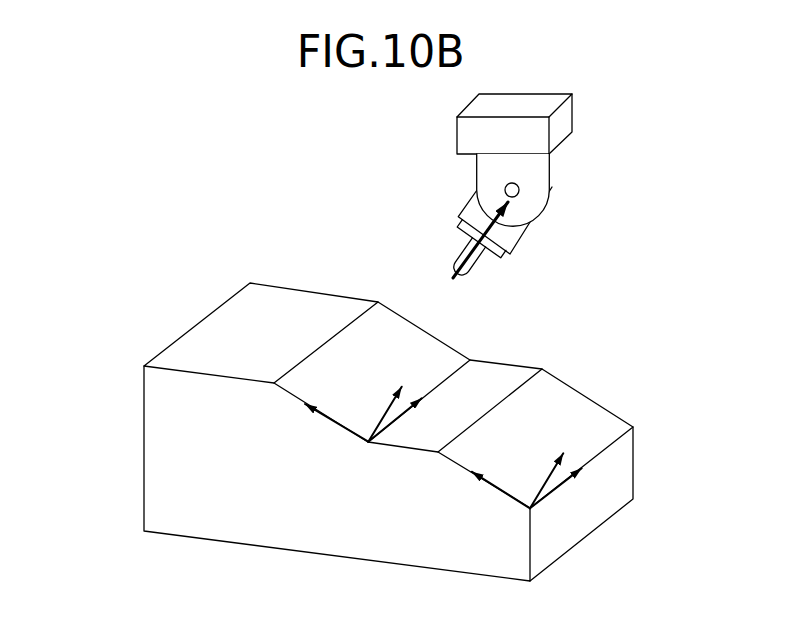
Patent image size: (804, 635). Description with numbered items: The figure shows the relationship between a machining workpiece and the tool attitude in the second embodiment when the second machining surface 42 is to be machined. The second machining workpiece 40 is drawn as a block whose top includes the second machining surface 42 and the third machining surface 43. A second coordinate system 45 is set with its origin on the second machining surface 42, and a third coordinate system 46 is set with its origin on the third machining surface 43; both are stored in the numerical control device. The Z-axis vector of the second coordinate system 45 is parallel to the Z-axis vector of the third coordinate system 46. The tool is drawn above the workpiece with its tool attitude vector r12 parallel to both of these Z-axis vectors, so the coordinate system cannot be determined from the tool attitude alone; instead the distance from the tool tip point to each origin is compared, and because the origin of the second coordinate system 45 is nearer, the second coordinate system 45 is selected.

The second machining workpiece 40 is at (143, 410).
The second machining surface 42 is at (388, 335).
The third machining surface 43 is at (560, 393).
The second coordinate system 45 is at (368, 442).
The third coordinate system 46 is at (530, 508).
The tool attitude vector r12 is at (492, 230).